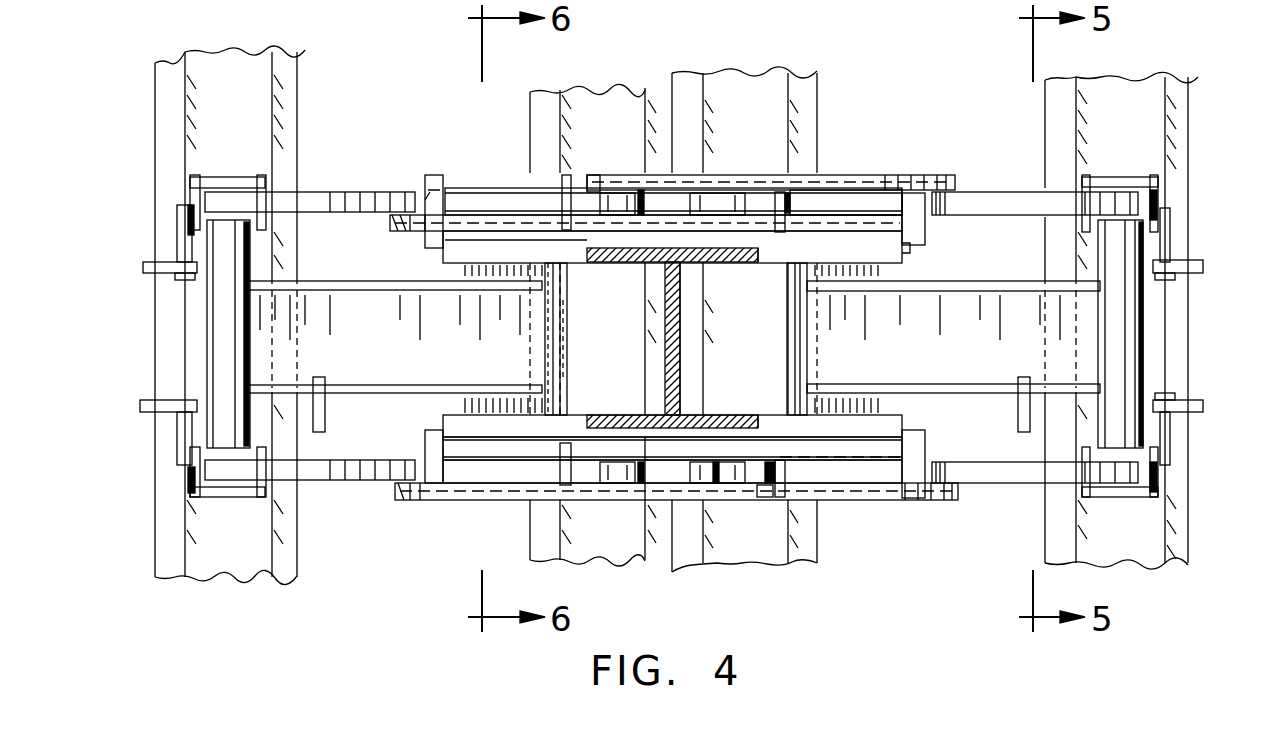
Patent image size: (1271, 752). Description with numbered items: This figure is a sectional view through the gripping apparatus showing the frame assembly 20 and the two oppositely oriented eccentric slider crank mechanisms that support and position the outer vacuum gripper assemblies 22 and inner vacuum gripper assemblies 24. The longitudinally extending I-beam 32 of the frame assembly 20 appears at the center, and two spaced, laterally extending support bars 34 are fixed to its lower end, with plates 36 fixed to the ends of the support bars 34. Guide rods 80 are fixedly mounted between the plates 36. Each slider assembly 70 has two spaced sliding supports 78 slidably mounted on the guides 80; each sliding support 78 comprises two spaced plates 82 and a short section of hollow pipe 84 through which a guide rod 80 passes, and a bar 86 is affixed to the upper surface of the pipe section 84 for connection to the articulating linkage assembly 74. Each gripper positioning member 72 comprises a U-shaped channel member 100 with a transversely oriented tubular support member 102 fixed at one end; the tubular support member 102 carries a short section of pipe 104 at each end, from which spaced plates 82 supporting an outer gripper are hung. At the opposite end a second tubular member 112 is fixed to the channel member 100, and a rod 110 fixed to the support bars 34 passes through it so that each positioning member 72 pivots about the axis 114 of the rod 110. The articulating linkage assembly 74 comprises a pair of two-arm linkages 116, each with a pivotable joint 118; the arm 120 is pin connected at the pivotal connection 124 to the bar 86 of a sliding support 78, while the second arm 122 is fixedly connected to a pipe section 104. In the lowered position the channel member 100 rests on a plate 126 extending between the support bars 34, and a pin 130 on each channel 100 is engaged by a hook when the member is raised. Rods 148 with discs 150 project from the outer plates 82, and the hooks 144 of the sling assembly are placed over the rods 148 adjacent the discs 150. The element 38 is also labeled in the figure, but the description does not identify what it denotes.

The frame assembly 20 is at (683, 360).
The outer vacuum gripper assembly 22 is at (302, 80).
The inner vacuum gripper assembly 24 is at (583, 86).
The I-beam 32 is at (683, 327).
The support bar 34 is at (773, 258).
The plate 36 is at (435, 178).
The wall plate 38 is at (185, 104).
The slider assembly 70 is at (555, 468).
The gripper positioning member 72 is at (315, 283).
The articulating linkage assembly 74 is at (372, 190).
The sliding support 78 is at (562, 180).
The guide 80 is at (880, 198).
The plate 82 is at (565, 200).
The hollow pipe section 84 is at (578, 188).
The bar 86 is at (790, 200).
The U-shaped channel member 100 is at (548, 300).
The tubular support member 102 is at (210, 340).
The pipe section 104 is at (240, 178).
The rod 110 is at (560, 265).
The second tubular member 112 is at (556, 368).
The pivot axis 114 is at (545, 258).
The two-arm linkage 116 is at (313, 190).
The pivotable joint 118 is at (400, 220).
The arm 120 is at (465, 500).
The second arm 122 is at (345, 446).
The pivotal connection 124 is at (612, 190).
The plate 126 is at (465, 275).
The pin 130 is at (326, 405).
The hook 144 is at (143, 265).
The rod 148 is at (177, 225).
The disc 150 is at (175, 278).